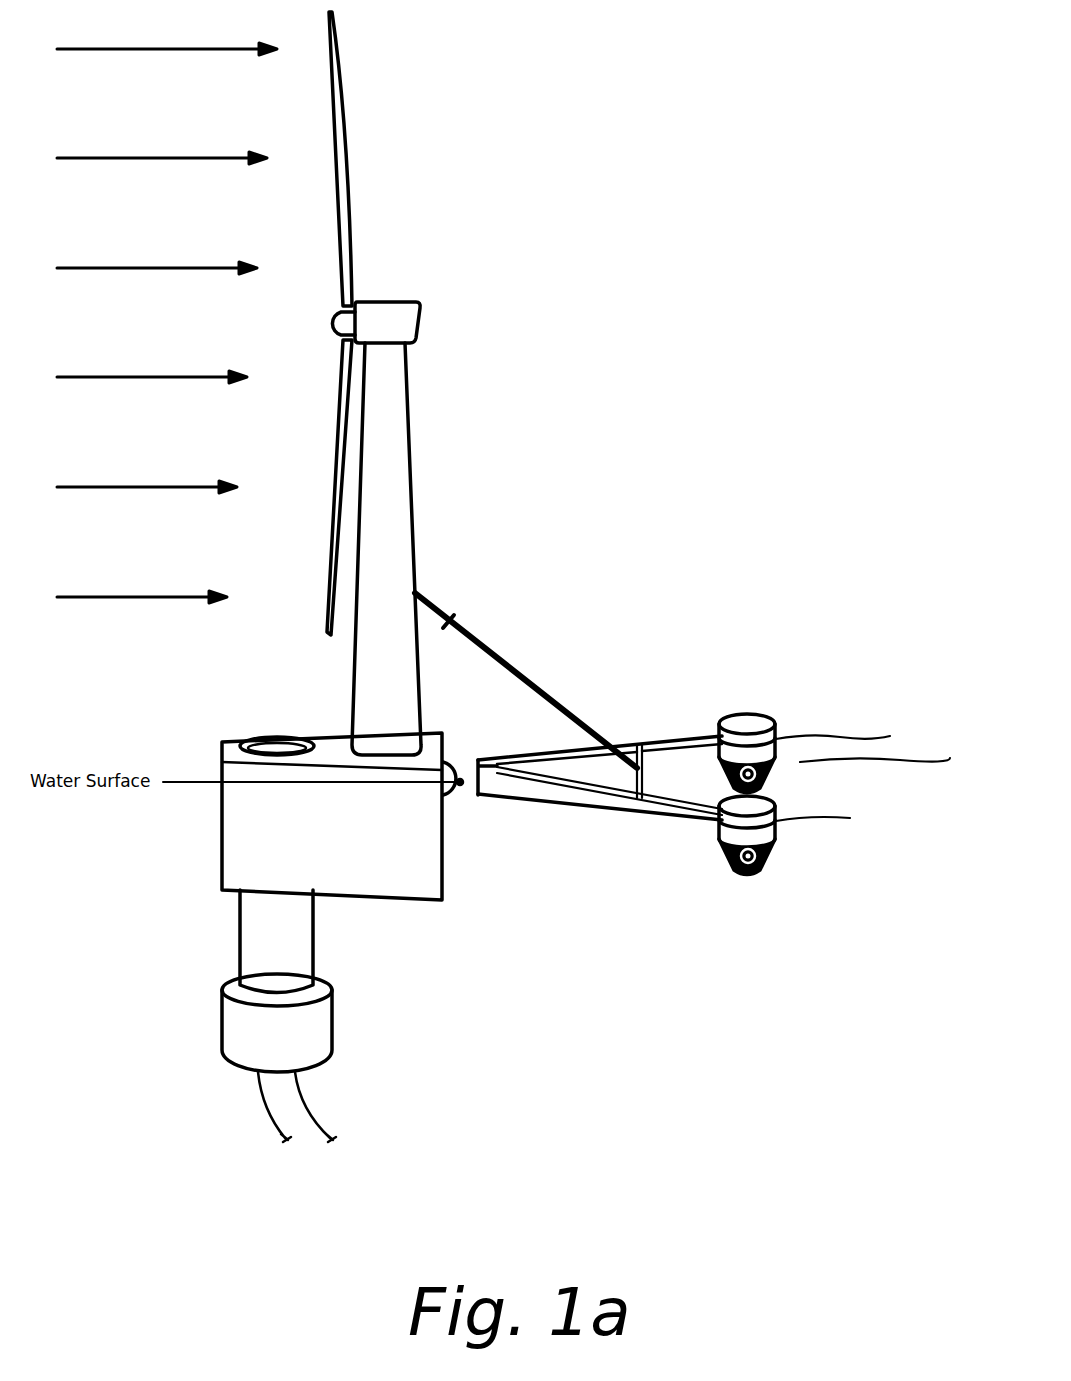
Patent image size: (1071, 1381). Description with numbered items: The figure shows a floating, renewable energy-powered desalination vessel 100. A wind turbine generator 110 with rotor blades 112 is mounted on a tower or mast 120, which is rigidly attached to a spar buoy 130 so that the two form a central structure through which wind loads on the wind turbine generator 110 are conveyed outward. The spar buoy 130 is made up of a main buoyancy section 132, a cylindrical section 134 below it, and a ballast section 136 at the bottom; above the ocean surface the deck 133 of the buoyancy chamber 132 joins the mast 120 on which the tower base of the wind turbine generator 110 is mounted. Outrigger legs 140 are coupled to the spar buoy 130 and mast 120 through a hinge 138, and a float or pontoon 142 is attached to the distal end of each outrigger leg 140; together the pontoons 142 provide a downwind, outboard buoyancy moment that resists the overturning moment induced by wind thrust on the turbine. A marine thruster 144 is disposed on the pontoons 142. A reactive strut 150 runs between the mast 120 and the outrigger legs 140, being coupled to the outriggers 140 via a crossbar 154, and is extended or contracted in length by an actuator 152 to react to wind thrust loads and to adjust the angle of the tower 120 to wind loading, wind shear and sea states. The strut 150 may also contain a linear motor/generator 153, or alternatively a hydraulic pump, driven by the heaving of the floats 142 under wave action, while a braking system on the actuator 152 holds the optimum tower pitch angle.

The floating and renewable energy-powered desalination vessel 100 is at (727, 147).
The wind turbine generator 110 is at (420, 302).
The rotor blades 112 is at (346, 163).
The tower (mast) 120 is at (415, 493).
The spar buoy 130 is at (340, 914).
The main buoyancy section 132 is at (446, 855).
The deck 133 is at (323, 740).
The cylindrical section 134 is at (317, 953).
The ballast section 136 is at (336, 1014).
The hinge 138 is at (458, 762).
The outrigger legs 140 is at (693, 735).
The floats or pontoons 142 is at (770, 716).
The marine thruster 144 is at (765, 776).
The reactive strut 150 is at (518, 668).
The actuator 152 is at (597, 745).
The linear motor/generator 153 is at (440, 607).
The crossbar 154 is at (645, 782).